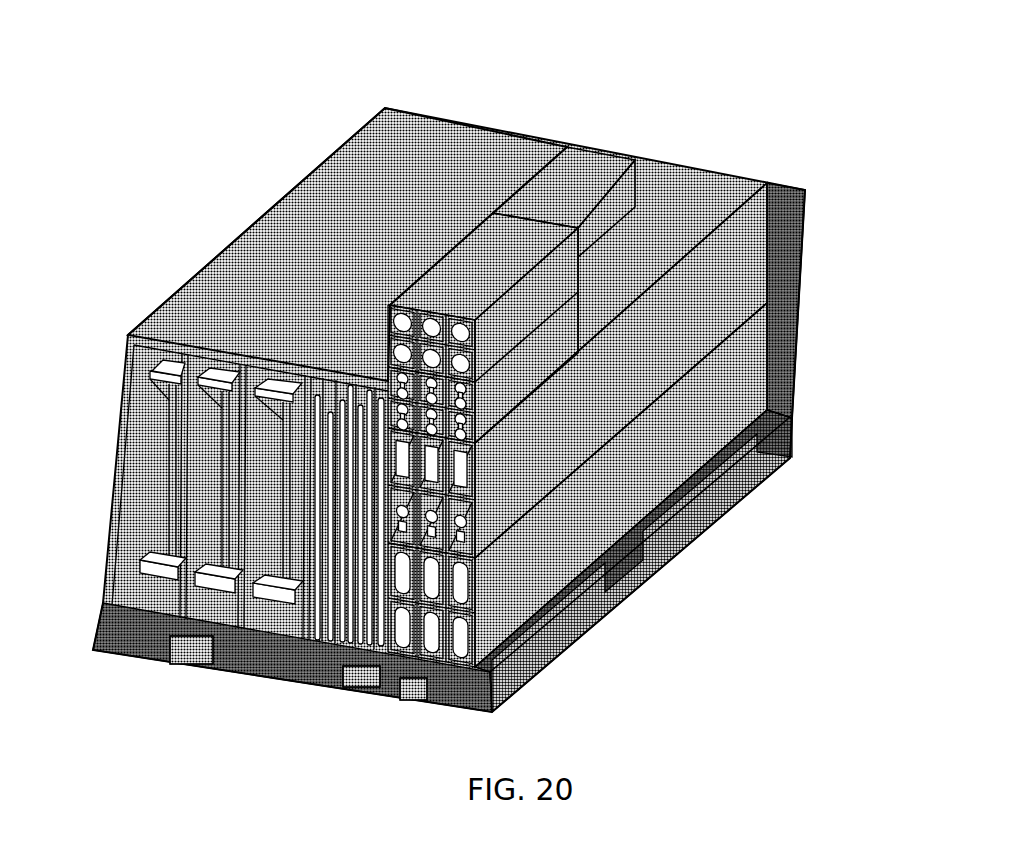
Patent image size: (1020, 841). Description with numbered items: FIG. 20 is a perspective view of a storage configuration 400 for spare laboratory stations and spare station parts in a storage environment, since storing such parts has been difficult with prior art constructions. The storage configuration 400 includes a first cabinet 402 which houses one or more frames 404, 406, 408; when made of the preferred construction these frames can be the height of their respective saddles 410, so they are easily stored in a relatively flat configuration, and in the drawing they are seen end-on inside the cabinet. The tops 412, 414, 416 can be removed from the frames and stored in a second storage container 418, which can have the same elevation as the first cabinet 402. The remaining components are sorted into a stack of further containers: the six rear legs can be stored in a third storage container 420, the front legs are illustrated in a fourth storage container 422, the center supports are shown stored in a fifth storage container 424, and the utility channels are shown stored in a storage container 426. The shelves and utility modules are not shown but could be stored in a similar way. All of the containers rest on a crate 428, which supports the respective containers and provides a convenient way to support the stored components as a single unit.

The storage configuration 400 is at (498, 113).
The first cabinet 402 is at (287, 217).
The frame 404 is at (162, 580).
The frame 406 is at (208, 592).
The frame 408 is at (275, 600).
The saddle 410 is at (182, 373).
The top 412 is at (327, 617).
The top 414 is at (345, 617).
The top 416 is at (363, 628).
The second storage container 418 is at (543, 192).
The third storage container 420 is at (577, 485).
The fourth storage container 422 is at (483, 328).
The fifth storage container 424 is at (483, 367).
The storage container 426 is at (577, 370).
The crate 428 is at (547, 627).